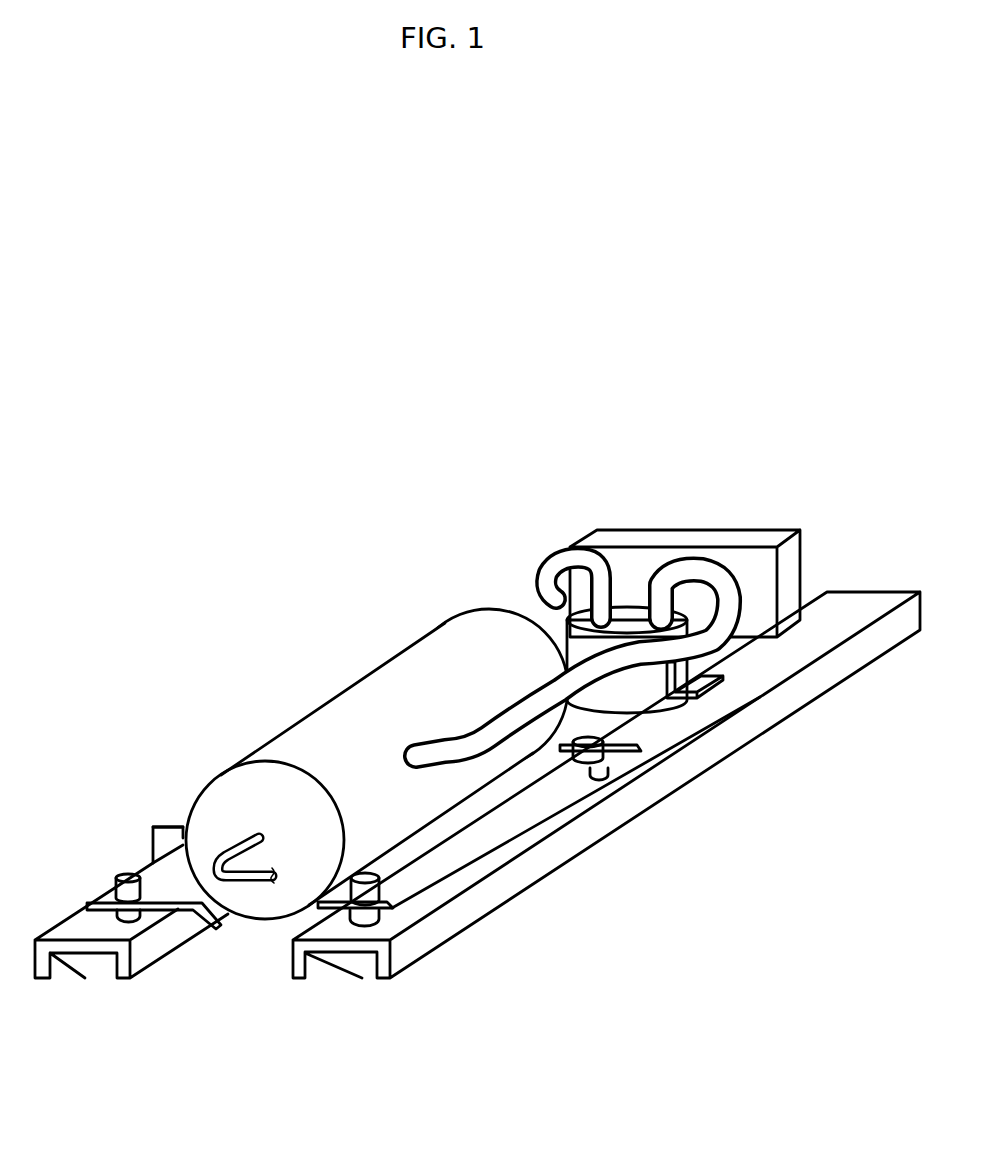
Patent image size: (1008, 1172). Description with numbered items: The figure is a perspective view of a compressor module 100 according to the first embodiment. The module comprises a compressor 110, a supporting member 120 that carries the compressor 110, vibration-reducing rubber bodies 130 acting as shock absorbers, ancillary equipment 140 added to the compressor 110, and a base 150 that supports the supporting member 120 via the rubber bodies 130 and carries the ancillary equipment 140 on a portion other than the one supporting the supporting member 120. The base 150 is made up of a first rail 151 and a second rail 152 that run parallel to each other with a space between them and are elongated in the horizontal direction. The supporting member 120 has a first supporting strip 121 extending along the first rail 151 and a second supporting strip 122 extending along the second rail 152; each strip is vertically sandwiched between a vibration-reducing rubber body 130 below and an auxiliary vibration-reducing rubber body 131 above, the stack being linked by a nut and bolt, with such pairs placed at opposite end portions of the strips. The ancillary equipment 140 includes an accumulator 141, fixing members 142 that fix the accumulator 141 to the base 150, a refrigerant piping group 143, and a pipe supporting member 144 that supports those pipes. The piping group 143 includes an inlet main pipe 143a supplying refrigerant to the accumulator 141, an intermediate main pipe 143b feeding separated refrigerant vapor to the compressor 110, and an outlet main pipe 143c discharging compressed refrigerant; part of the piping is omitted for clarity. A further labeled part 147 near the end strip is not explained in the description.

The compressor module 100 is at (230, 389).
The compressor 110 is at (350, 717).
The supporting member 120 is at (422, 765).
The first supporting strip 121 is at (170, 885).
The second supporting strip 122 is at (407, 873).
The vibration-reducing rubber body 130 is at (122, 914).
The auxiliary vibration-reducing rubber body 131 is at (117, 885).
The ancillary equipment 140 is at (706, 569).
The accumulator 141 is at (635, 615).
The fixing member 142 is at (700, 688).
The refrigerant piping group 143 is at (504, 719).
The inlet main pipe 143a is at (557, 545).
The intermediate main pipe 143b is at (583, 678).
The outlet main pipe 143c is at (247, 882).
The pipe supporting member 144 is at (718, 540).
The insulating member 147 is at (158, 835).
The base 150 is at (477, 876).
The first rail 151 is at (97, 948).
The second rail 152 is at (345, 948).